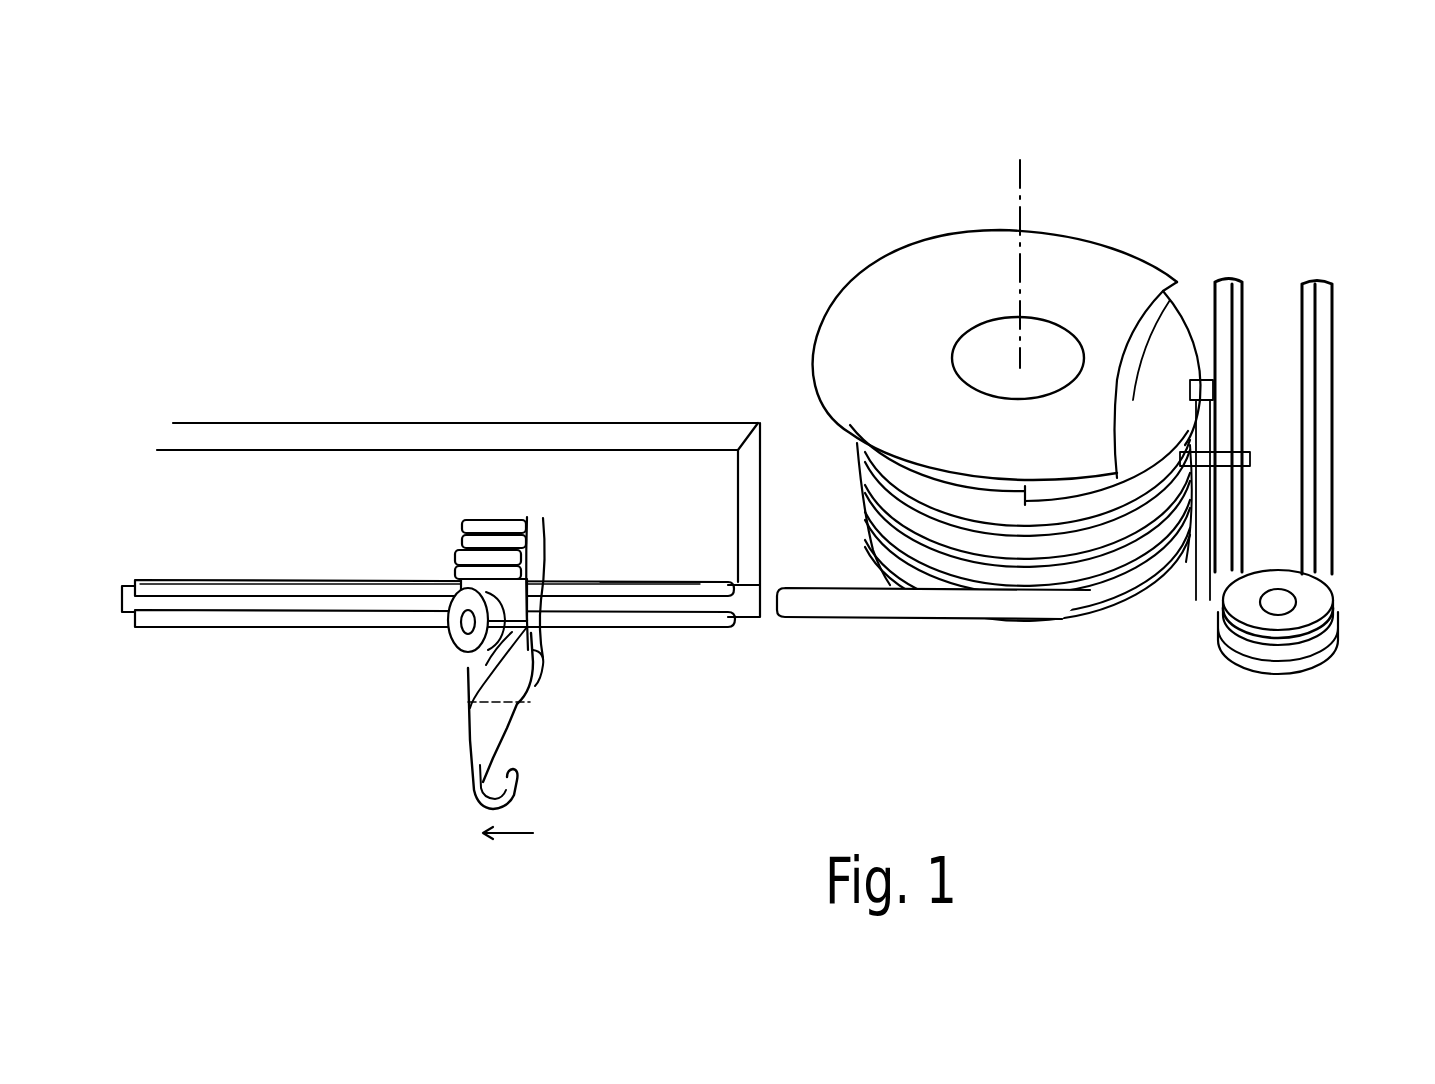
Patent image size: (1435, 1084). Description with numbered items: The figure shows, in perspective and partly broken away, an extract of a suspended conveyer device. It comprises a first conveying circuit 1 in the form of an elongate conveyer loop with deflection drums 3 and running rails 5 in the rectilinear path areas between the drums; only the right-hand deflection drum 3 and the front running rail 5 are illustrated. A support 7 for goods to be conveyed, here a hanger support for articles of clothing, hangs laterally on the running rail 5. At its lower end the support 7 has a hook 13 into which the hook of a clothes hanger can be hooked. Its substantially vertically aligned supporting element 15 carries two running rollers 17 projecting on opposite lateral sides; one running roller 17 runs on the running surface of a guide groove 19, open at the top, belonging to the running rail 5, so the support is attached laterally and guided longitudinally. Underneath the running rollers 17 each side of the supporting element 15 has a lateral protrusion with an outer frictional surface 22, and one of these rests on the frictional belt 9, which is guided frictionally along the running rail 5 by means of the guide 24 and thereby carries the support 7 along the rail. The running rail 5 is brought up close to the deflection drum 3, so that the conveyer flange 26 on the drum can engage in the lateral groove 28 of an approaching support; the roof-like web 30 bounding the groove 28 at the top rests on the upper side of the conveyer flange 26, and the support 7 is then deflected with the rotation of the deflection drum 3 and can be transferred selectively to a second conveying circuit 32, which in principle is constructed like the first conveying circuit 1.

The first conveying circuit 1 is at (525, 407).
The deflection drum 3 is at (1068, 280).
The running rail 5 is at (338, 634).
The support for goods to be conveyed 7 is at (1205, 598).
The frictional belt 9 is at (822, 607).
The hook 13 is at (520, 786).
The supporting element 15 is at (478, 722).
The running roller 17 is at (466, 648).
The guide groove 19 is at (610, 580).
The frictional surface 22 is at (482, 667).
The guide 24 is at (220, 612).
The conveyer flange 26 is at (900, 473).
The lateral groove 28 is at (548, 535).
The roof-like web 30 is at (450, 545).
The second conveying circuit 32 is at (1340, 332).